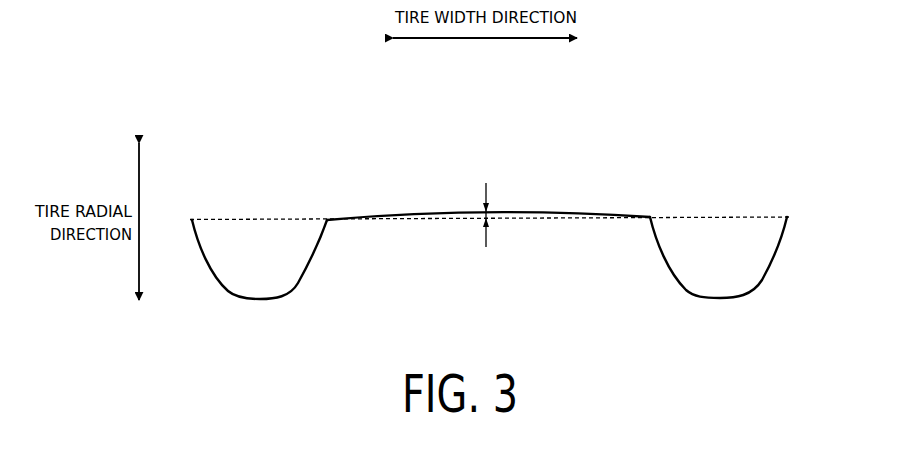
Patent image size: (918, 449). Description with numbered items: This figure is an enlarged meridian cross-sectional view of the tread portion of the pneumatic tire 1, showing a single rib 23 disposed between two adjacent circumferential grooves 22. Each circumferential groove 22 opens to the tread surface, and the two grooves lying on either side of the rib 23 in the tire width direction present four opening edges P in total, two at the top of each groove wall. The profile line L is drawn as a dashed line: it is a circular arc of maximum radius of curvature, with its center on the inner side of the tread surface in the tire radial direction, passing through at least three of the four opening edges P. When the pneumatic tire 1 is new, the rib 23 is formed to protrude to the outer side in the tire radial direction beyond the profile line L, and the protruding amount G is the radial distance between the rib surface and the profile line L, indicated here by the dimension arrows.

The pneumatic tire 1 is at (489, 172).
The circumferential groove 22 is at (199, 251).
The rib 23 is at (572, 237).
The opening edge P is at (192, 218).
The protruding amount G is at (476, 213).
The profile line L is at (743, 217).